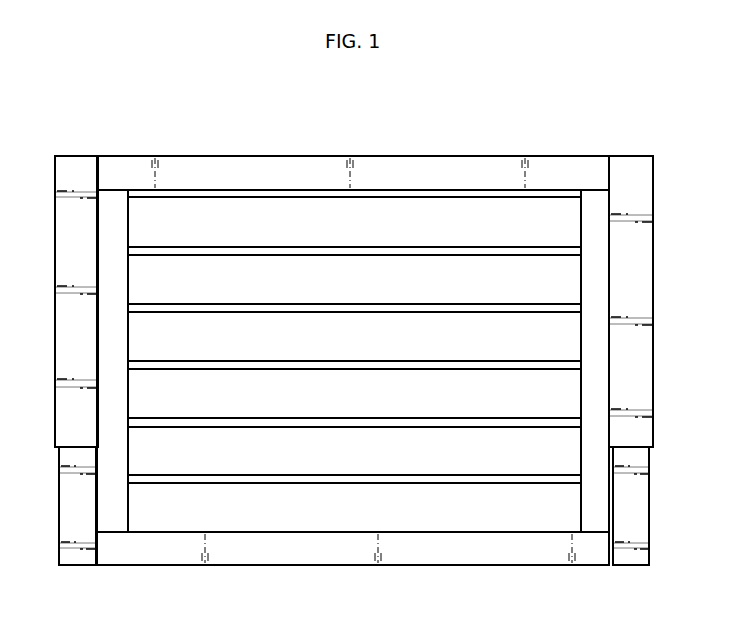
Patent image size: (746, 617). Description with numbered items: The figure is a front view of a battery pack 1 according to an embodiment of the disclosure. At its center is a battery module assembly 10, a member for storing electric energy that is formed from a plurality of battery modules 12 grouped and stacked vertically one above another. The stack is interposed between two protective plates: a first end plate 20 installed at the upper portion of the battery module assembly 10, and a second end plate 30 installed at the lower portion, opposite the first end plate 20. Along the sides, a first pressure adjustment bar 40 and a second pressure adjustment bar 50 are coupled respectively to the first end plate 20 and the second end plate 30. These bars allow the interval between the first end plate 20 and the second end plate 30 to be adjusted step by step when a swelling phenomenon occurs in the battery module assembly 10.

The battery pack 1 is at (86, 106).
The battery module assembly 10 is at (593, 332).
The battery module 12 is at (569, 278).
The first end plate 20 is at (571, 165).
The second end plate 30 is at (492, 558).
The first pressure adjustment bar 40 is at (56, 261).
The second pressure adjustment bar 50 is at (60, 506).